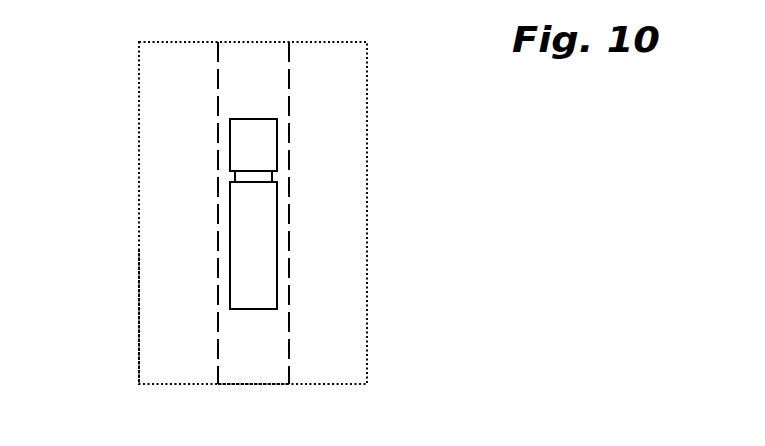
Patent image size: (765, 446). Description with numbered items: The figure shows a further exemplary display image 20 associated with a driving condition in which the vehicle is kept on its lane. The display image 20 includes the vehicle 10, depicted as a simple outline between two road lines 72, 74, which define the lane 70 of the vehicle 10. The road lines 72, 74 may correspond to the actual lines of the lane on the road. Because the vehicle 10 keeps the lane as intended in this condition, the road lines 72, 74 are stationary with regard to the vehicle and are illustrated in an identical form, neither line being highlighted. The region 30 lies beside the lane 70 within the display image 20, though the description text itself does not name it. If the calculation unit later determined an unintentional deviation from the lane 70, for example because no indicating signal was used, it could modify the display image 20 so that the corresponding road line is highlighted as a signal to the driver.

The vehicle 10 is at (262, 211).
The display image 20 is at (137, 106).
The adjacent lane 30 is at (178, 299).
The lane 70 is at (255, 353).
The road line 72 is at (218, 108).
The road line 74 is at (291, 325).